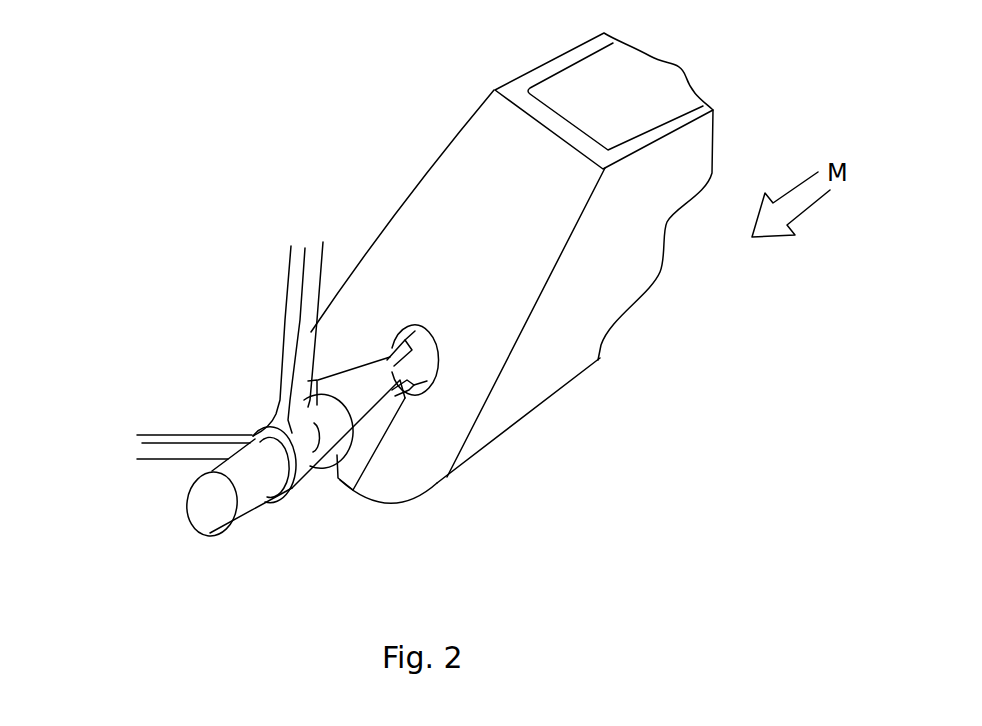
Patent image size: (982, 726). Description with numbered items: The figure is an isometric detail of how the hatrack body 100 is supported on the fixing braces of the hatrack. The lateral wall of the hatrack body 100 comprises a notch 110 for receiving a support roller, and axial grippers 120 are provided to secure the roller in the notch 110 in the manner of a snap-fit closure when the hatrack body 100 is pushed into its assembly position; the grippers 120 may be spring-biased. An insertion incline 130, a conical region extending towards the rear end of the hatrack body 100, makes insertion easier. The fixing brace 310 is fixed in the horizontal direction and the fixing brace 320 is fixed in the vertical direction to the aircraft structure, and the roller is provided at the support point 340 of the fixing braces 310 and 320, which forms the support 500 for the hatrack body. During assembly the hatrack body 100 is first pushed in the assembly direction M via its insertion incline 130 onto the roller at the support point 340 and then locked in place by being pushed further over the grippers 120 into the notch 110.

The hatrack body 100 is at (580, 311).
The notch 110 is at (428, 363).
The axial grippers 120 is at (400, 388).
The insertion incline 130 is at (365, 412).
The fixing brace 310 is at (160, 450).
The fixing brace 320 is at (295, 297).
The support point 340 is at (300, 473).
The support 500 is at (181, 516).